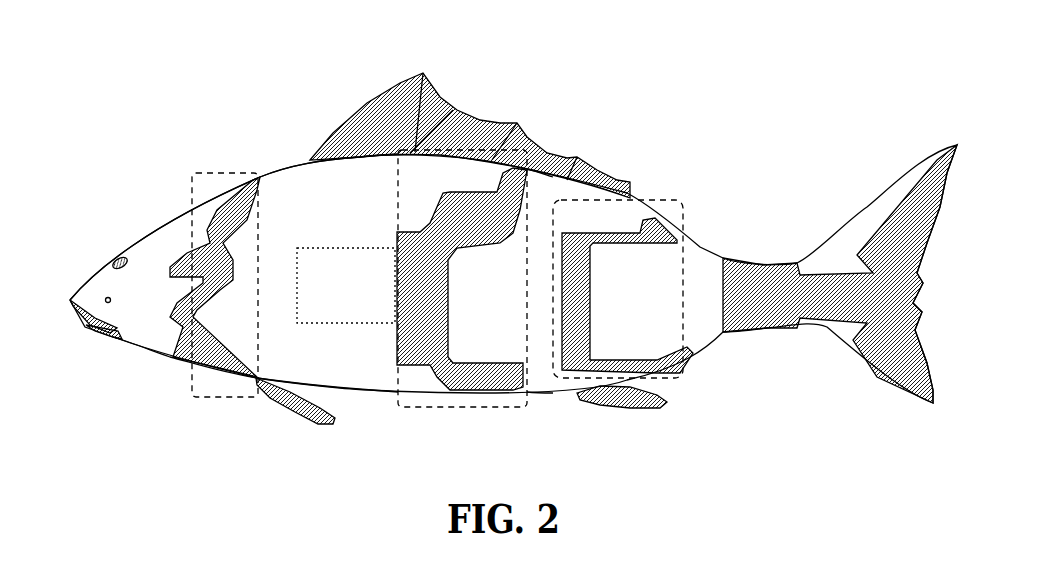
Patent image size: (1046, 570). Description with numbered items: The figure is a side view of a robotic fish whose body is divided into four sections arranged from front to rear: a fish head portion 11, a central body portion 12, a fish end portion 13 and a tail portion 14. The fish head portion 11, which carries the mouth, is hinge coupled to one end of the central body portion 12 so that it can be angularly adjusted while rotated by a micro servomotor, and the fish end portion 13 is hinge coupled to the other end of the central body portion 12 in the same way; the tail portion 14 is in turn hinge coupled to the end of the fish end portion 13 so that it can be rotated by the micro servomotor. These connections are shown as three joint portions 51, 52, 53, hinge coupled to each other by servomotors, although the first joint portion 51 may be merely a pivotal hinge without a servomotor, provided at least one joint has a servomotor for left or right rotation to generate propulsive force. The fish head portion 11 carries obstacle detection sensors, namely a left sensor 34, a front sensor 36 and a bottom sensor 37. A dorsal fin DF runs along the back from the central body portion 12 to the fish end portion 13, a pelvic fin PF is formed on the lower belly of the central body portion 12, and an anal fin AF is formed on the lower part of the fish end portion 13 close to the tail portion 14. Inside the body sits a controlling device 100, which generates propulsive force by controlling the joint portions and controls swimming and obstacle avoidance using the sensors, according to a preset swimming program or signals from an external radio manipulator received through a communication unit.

The fish head portion 11 is at (187, 210).
The central body portion 12 is at (357, 207).
The fish end portion 13 is at (560, 207).
The tail portion 14 is at (693, 270).
The left sensor 34 is at (112, 300).
The front sensor 36 is at (93, 277).
The bottom sensor 37 is at (155, 352).
The first joint portion 51 is at (225, 380).
The second joint portion 52 is at (473, 387).
The third joint portion 53 is at (590, 358).
The controlling device 100 is at (320, 323).
The dorsal fin DF is at (440, 90).
The pelvic fin PF is at (290, 415).
The anal fin AF is at (620, 407).